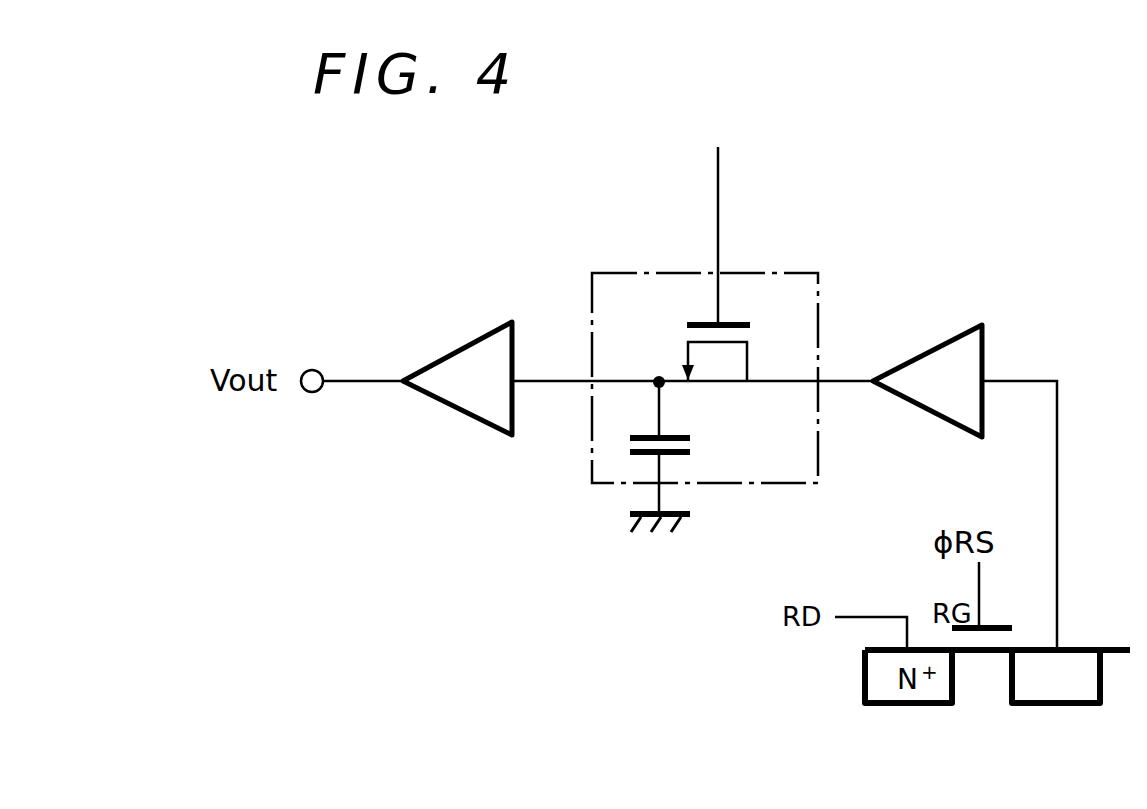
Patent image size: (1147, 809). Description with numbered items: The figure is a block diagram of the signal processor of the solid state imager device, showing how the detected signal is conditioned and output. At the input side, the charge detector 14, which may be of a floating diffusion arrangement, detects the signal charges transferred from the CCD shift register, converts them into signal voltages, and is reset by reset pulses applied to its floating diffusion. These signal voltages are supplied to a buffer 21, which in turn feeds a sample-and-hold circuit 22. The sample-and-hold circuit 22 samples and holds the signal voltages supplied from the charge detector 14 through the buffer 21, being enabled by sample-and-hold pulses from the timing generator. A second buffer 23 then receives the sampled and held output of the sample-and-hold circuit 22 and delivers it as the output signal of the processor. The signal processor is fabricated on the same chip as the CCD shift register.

The charge detector 14 is at (1074, 578).
The buffer 21 is at (920, 410).
The sample-and-hold circuit 22 is at (762, 273).
The buffer 23 is at (442, 402).